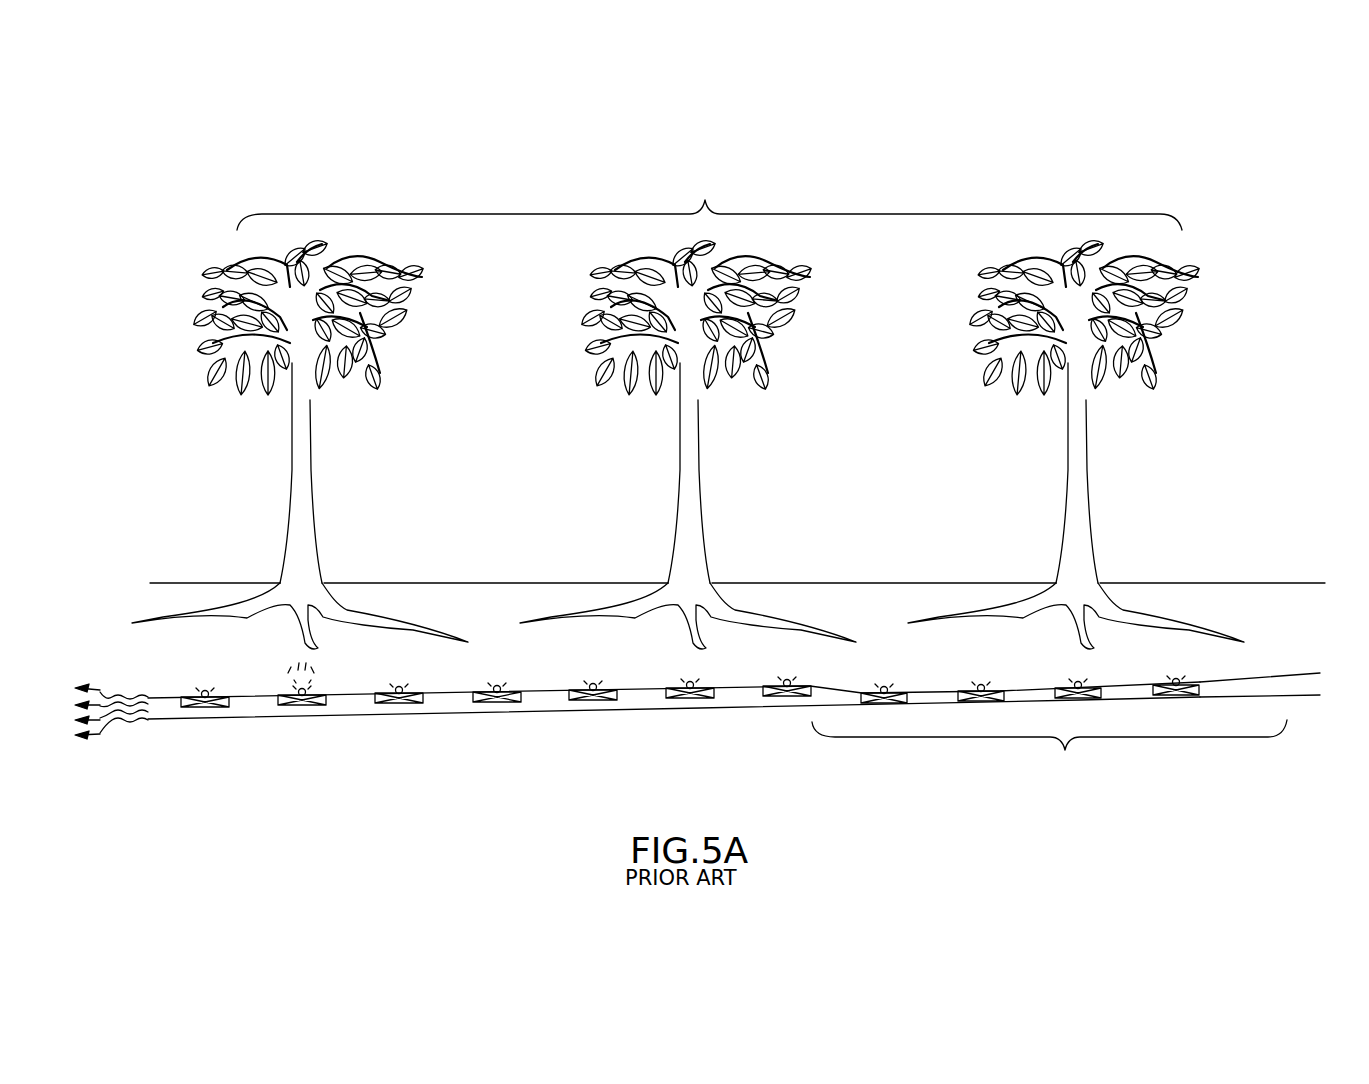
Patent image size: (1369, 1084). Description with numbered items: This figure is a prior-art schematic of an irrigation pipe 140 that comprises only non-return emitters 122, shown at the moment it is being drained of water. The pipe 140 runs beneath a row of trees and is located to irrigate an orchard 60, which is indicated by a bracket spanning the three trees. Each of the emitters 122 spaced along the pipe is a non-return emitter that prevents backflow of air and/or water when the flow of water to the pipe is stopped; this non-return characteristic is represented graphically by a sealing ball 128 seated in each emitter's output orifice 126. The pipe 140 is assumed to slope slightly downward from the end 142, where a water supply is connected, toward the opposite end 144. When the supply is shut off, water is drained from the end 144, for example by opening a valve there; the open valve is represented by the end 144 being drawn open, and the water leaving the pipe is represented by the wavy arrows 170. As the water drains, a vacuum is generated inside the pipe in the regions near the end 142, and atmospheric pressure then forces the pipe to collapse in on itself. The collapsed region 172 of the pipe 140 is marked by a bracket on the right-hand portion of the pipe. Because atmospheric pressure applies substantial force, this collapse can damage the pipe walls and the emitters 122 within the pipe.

The orchard 60 is at (705, 200).
The emitters 122 is at (676, 705).
The output orifices 126 is at (590, 686).
The sealing ball 128 is at (690, 683).
The irrigation pipe 140 is at (674, 767).
The end 142 is at (1290, 672).
The end 144 is at (148, 721).
The wavy arrows 170 is at (110, 697).
The region 172 is at (1065, 750).